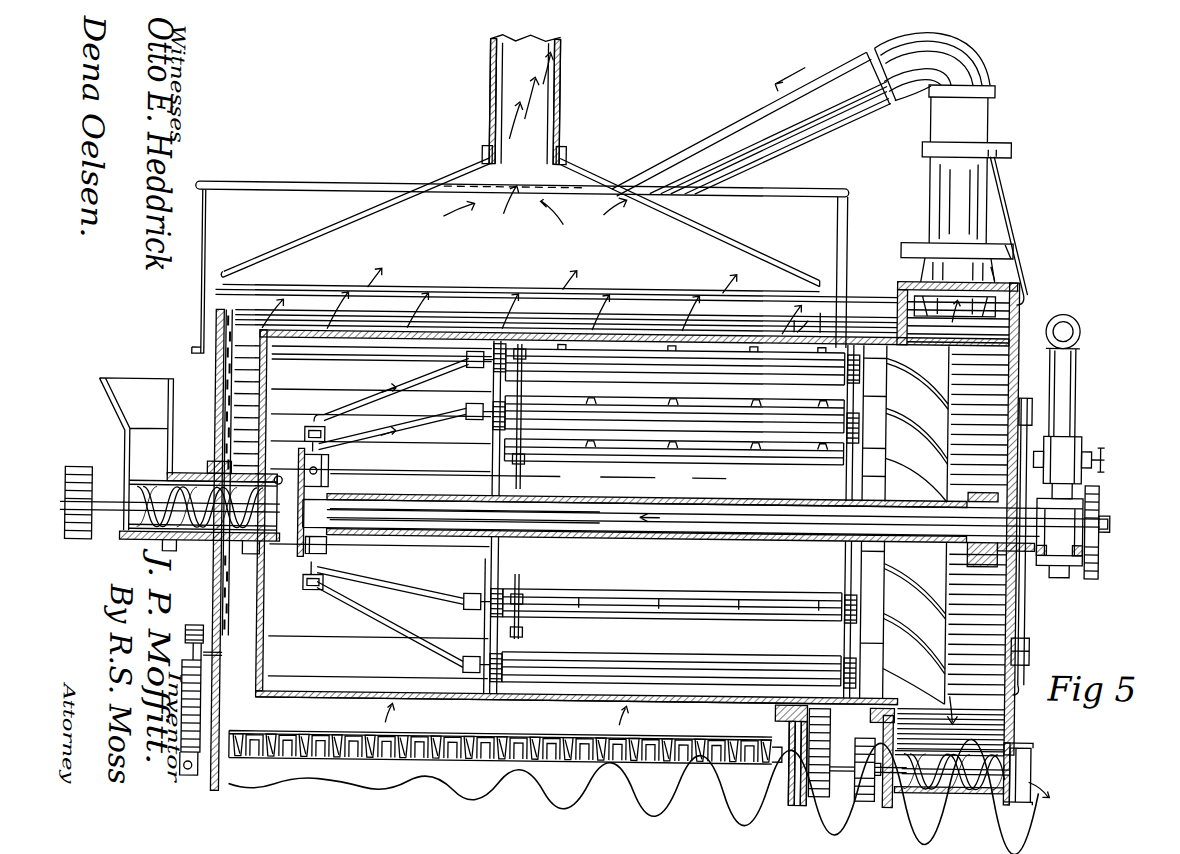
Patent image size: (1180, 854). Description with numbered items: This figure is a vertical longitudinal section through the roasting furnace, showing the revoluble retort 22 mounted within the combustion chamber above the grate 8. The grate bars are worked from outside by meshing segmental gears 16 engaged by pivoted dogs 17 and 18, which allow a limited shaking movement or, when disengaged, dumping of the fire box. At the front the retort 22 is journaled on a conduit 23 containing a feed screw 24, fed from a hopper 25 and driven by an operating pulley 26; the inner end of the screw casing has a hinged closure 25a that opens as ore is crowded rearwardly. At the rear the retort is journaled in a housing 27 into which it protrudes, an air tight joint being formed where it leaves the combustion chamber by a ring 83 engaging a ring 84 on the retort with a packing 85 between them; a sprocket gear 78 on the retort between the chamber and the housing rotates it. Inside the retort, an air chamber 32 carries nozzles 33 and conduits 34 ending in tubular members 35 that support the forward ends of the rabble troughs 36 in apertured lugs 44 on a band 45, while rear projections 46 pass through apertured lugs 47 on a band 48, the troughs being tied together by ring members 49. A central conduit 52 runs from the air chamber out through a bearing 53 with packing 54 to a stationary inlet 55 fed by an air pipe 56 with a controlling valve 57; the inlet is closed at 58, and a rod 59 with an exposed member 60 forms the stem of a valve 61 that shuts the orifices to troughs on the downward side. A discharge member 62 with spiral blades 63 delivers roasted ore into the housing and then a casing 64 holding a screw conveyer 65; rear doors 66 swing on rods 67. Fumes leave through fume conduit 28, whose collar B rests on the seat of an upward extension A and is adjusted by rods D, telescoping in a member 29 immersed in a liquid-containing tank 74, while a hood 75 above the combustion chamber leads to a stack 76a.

The grate 8 is at (506, 732).
The segmental gear 16 is at (204, 715).
The pivoted dog 17 is at (203, 630).
The pivoted dog 18 is at (205, 657).
The revoluble retort 22 is at (430, 701).
The conduit 23 is at (192, 470).
The feed screw 24 is at (150, 545).
The hopper 25 is at (136, 454).
The hinged closure 25a is at (279, 507).
The operating pulley 26 is at (78, 547).
The housing 27 is at (900, 314).
The fume conducting conduit 28 is at (976, 193).
The telescoping member 29 is at (735, 125).
The air chamber 32 is at (326, 471).
The nozzle 33 is at (309, 443).
The conduit 34 is at (352, 408).
The tubular member 35 is at (486, 370).
The rabble trough 36 is at (806, 451).
The apertured lug 44 is at (498, 434).
The band 45 is at (488, 577).
The projection 46 is at (860, 424).
The apertured lug 47 is at (878, 391).
The band 48 is at (856, 475).
The ring member 49 is at (520, 436).
The conduit 52 is at (528, 476).
The bearing 53 is at (981, 488).
The packing 54 is at (984, 562).
The stationary inlet 55 is at (1040, 556).
The air pipe 56 is at (1075, 403).
The controlling valve 57 is at (1108, 446).
The closure 58 is at (1098, 494).
The rod 59 is at (1083, 517).
The exposed member 60 is at (1103, 536).
The valve 61 is at (314, 543).
The discharge member 62 is at (930, 596).
The spirally arranged blades 63 is at (960, 662).
The casing 64 is at (995, 806).
The screw conveyer 65 is at (965, 757).
The door 66 is at (868, 766).
The rod 67 is at (1032, 637).
The liquid-containing tank 74 is at (521, 251).
The hood 75 is at (532, 259).
The stack 76a is at (540, 113).
The sprocket gear 78 is at (850, 718).
The ring 83 is at (820, 308).
The ring 84 is at (793, 320).
The packing 85 is at (804, 318).
The upward extension A is at (994, 267).
The collar B is at (1003, 245).
The rod D is at (1010, 212).